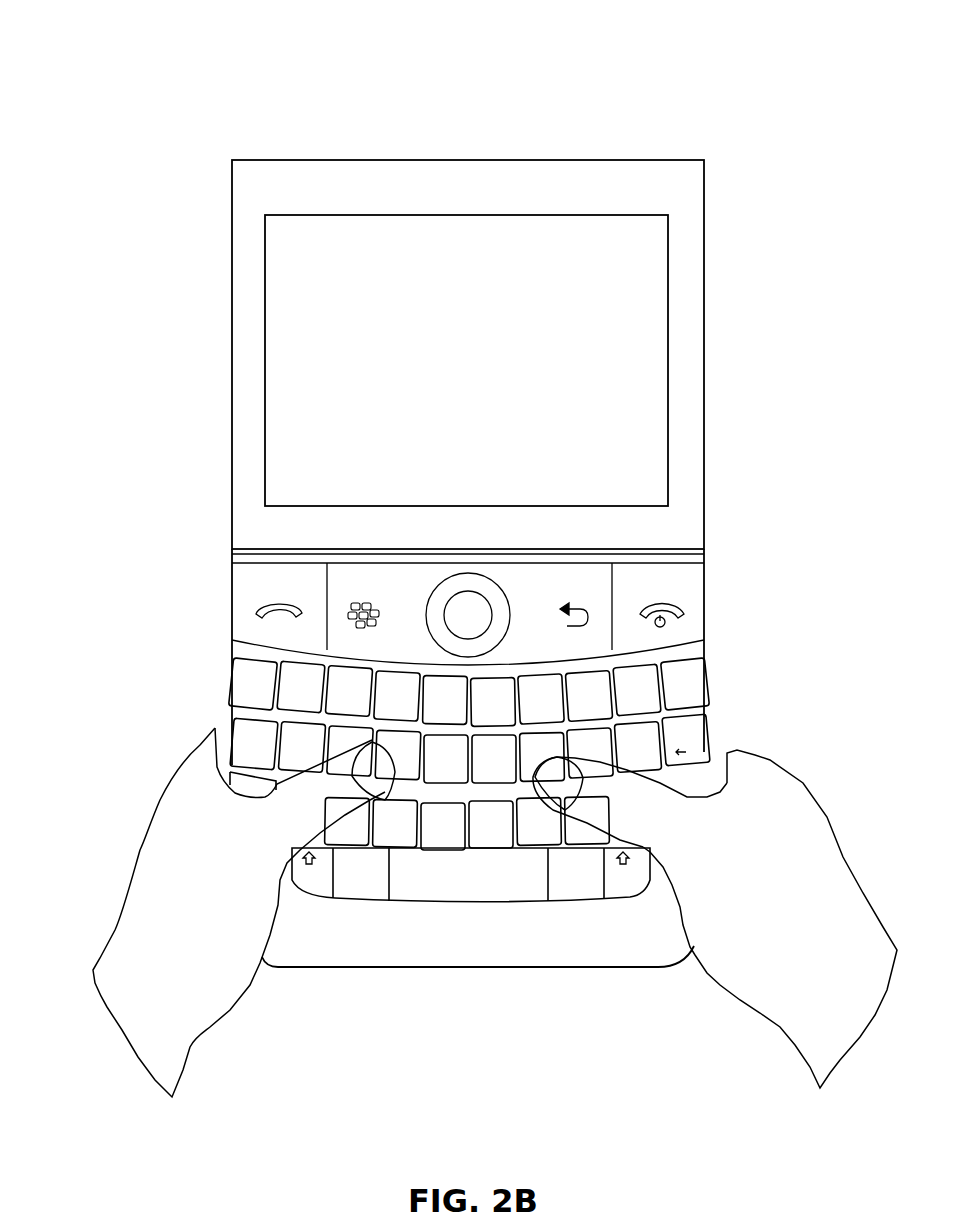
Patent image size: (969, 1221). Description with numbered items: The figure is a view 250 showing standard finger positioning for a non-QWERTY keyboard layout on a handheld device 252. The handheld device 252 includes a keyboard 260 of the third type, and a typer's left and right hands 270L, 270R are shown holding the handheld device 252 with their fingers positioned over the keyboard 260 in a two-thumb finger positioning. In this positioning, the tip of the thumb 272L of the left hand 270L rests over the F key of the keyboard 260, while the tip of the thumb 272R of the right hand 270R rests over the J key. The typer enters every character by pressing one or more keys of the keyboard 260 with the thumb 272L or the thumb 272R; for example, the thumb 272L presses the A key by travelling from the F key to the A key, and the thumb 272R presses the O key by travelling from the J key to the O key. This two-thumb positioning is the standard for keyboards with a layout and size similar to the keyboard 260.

The view 250 is at (752, 66).
The handheld device 252 is at (713, 352).
The keyboard 260 is at (233, 678).
The left hand 270L is at (172, 775).
The right hand 270R is at (803, 783).
The thumb 272L is at (310, 800).
The thumb 272R is at (635, 817).